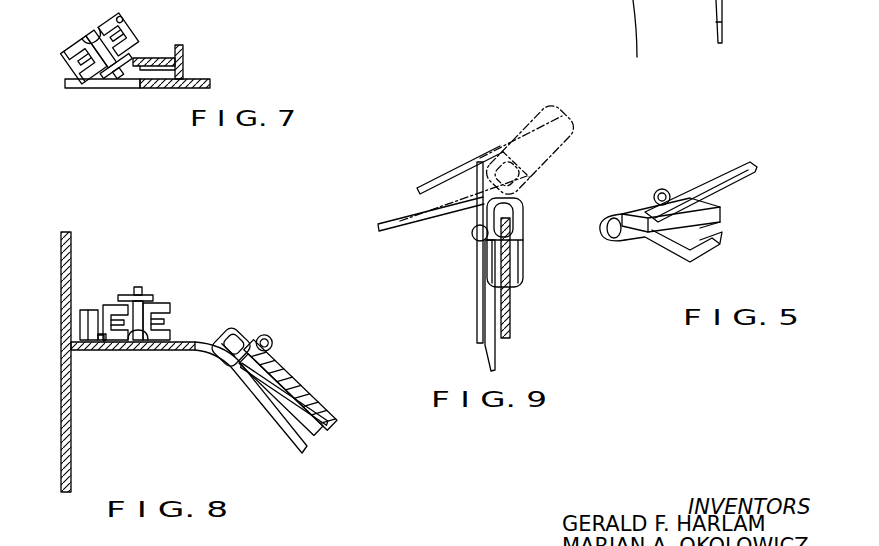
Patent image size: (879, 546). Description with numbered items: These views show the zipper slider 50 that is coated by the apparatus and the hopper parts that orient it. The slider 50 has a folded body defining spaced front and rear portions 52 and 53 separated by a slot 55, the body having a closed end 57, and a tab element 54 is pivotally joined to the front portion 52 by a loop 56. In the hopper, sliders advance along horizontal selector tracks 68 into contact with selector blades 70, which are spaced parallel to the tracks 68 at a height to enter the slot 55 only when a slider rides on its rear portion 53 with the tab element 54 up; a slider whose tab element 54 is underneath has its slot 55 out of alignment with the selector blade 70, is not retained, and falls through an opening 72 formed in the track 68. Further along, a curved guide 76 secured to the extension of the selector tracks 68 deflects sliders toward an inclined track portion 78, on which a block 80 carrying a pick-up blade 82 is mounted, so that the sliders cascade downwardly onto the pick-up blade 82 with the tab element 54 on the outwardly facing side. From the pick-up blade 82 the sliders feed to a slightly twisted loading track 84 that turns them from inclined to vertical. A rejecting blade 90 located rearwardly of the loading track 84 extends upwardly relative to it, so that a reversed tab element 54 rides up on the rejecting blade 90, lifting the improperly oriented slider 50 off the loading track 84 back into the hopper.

In FIG. 8, the zipper slider 50 is at (166, 293).
In FIG. 9, the zipper slider 50 is at (526, 265).
In FIG. 5, the zipper slider 50 is at (670, 184).
In FIG. 7, the front portion 52 is at (62, 53).
In FIG. 8, the front portion 52 is at (102, 313).
In FIG. 5, the front portion 52 is at (718, 206).
In FIG. 7, the rear portion 53 is at (72, 72).
In FIG. 8, the rear portion 53 is at (103, 339).
In FIG. 5, the rear portion 53 is at (660, 253).
In FIG. 7, the tab element 54 is at (104, 76).
In FIG. 8, the tab element 54 is at (127, 292).
In FIG. 9, the tab element 54 is at (433, 181).
In FIG. 5, the tab element 54 is at (713, 177).
In FIG. 7, the slot 55 is at (130, 50).
In FIG. 8, the slot 55 is at (170, 332).
In FIG. 5, the slot 55 is at (722, 242).
In FIG. 7, the loop 56 is at (108, 15).
In FIG. 8, the loop 56 is at (270, 337).
In FIG. 5, the loop 56 is at (653, 200).
In FIG. 7, the closed end 57 is at (95, 35).
In FIG. 8, the closed end 57 is at (133, 340).
In FIG. 5, the closed end 57 is at (603, 217).
In FIG. 7, the selector track 68 is at (192, 78).
In FIG. 7, the selector blade 70 is at (153, 58).
In FIG. 7, the opening 72 is at (78, 82).
In FIG. 8, the curved guide 76 is at (80, 322).
In FIG. 8, the inclined track portion 78 is at (242, 392).
In FIG. 8, the block 80 is at (335, 425).
In FIG. 8, the pick-up blade 82 is at (270, 383).
In FIG. 9, the loading track 84 is at (511, 320).
In FIG. 9, the rejecting blade 90 is at (477, 223).